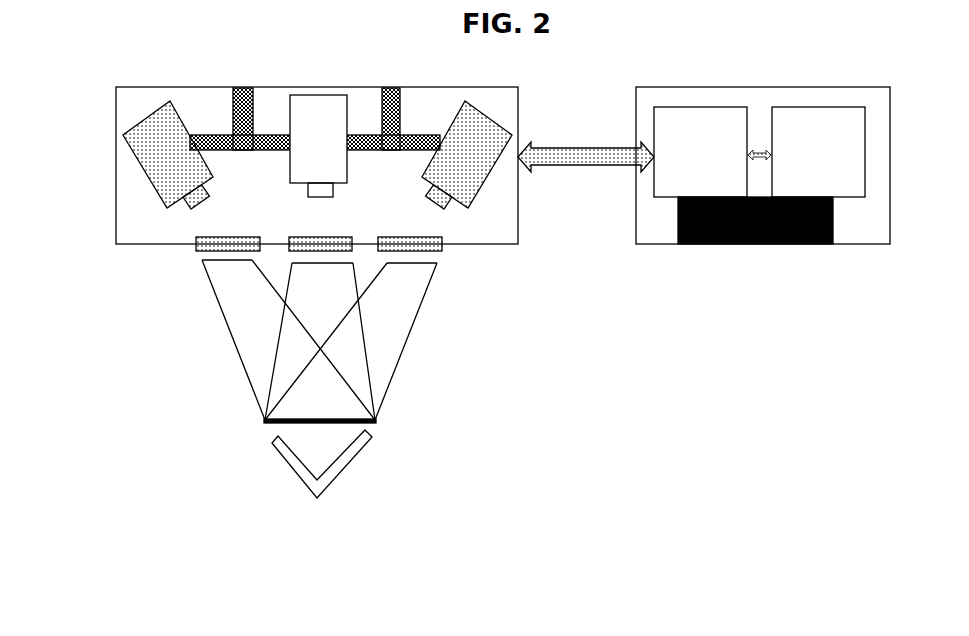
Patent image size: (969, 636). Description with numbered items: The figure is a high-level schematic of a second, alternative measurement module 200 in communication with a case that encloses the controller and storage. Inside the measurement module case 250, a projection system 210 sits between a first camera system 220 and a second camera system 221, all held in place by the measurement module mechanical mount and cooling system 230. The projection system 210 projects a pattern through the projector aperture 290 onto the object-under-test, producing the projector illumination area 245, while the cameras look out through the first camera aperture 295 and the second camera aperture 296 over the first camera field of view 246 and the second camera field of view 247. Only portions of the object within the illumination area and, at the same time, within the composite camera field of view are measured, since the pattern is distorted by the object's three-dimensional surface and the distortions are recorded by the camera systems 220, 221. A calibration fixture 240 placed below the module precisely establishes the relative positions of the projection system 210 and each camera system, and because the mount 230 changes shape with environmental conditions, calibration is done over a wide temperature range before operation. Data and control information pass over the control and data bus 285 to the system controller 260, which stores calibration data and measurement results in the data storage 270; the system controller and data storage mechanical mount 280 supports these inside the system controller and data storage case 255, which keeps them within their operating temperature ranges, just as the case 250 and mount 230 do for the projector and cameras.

The alternative measurement module 200 is at (333, 558).
The projection system 210 is at (318, 146).
The first camera system 220 is at (168, 155).
The second camera system 221 is at (467, 155).
The measurement module mechanical mount and cooling system 230 is at (233, 118).
The calibration fixture 240 is at (344, 470).
The projector illumination area 245 is at (367, 345).
The first camera field of view 246 is at (250, 397).
The second camera field of view 247 is at (428, 293).
The measurement module case 250 is at (160, 245).
The system controller and data storage case 255 is at (833, 246).
The system controller 260 is at (700, 152).
The data storage 270 is at (818, 152).
The system controller and data storage mechanical mount 280 is at (678, 231).
The control and data bus 285 is at (574, 141).
The projector aperture 290 is at (347, 252).
The first camera aperture 295 is at (202, 260).
The second camera aperture 296 is at (438, 252).